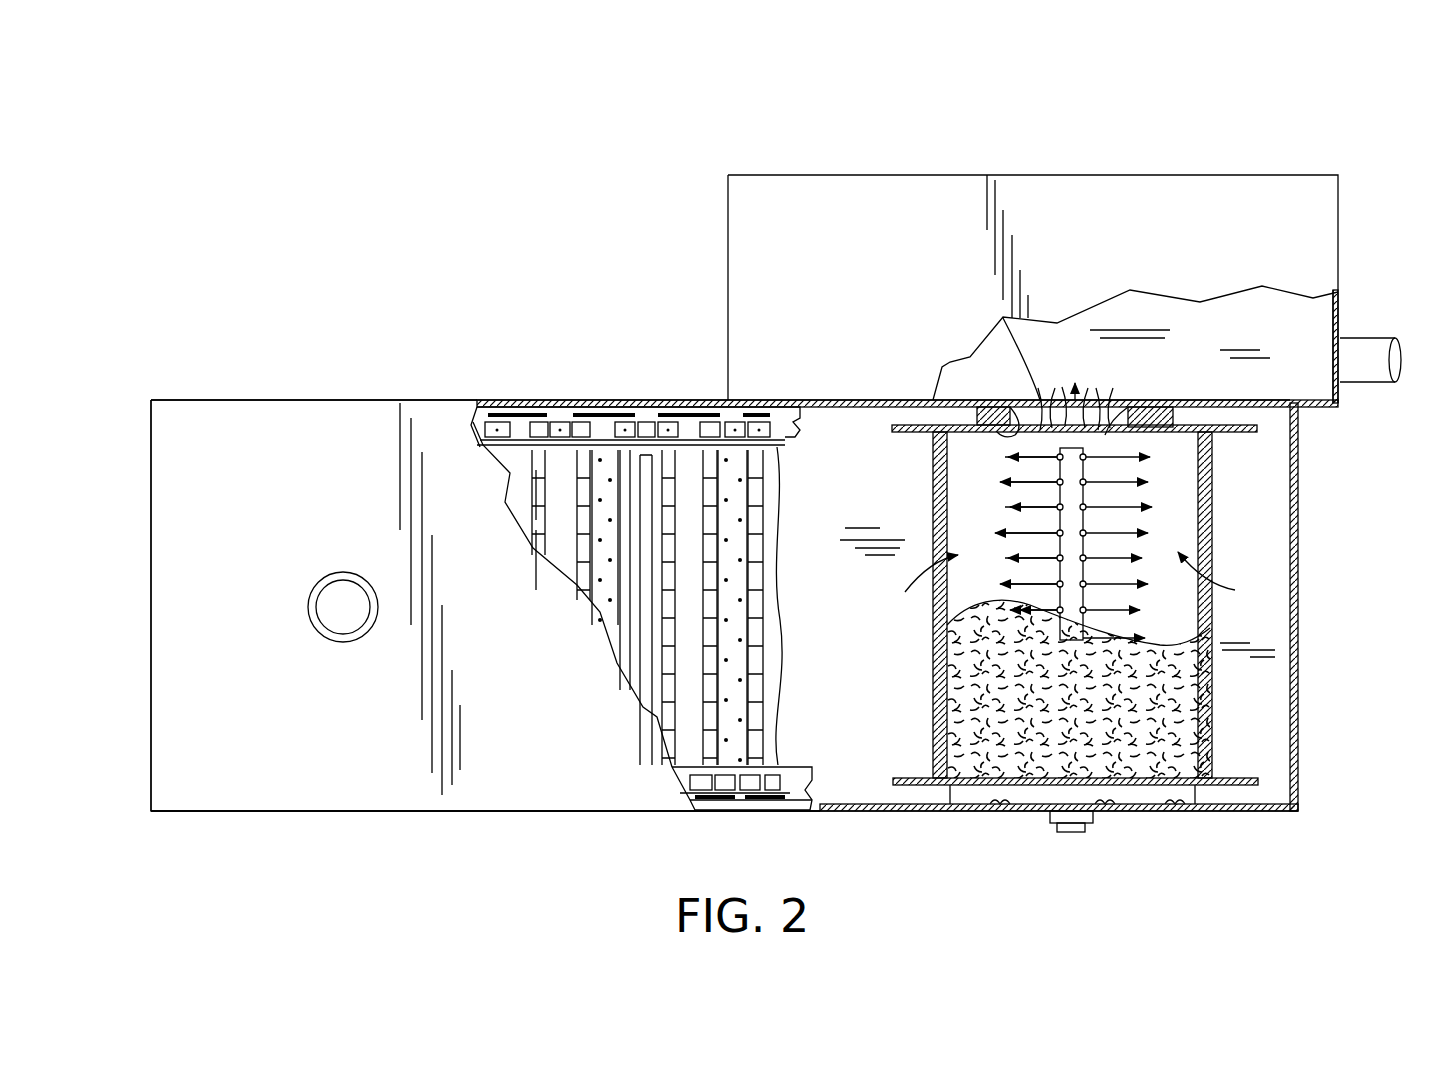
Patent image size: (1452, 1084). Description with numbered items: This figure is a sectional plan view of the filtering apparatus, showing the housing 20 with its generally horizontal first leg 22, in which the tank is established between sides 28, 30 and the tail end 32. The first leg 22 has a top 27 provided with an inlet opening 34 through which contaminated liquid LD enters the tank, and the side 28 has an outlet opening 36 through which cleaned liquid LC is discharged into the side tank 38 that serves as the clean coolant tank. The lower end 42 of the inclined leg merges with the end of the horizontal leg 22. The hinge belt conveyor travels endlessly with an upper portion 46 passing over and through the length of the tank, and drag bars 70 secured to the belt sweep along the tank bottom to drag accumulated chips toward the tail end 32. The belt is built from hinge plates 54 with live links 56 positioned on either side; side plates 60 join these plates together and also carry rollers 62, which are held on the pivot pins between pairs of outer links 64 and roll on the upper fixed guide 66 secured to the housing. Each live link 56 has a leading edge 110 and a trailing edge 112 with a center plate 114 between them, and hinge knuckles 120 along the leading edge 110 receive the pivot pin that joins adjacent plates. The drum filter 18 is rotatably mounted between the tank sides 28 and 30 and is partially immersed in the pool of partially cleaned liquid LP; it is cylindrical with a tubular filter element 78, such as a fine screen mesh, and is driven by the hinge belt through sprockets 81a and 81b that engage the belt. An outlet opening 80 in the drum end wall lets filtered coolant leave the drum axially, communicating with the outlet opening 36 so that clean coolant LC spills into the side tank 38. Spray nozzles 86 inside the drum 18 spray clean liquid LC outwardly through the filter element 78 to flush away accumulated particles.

The drum filter 18 is at (1208, 714).
The housing 20 is at (893, 589).
The first leg 22 is at (243, 428).
The top 27 is at (363, 445).
The side 28 is at (275, 398).
The side 30 is at (305, 812).
The end 32 is at (150, 638).
The inlet opening 34 is at (337, 622).
The outlet opening 36 is at (1130, 405).
The side tank 38 is at (1128, 183).
The lower end 42 is at (1298, 762).
The upper portion 46 is at (532, 417).
The hinge plate 54 is at (600, 600).
The live link 56 is at (560, 565).
The side plate 60 is at (775, 767).
The roller 62 is at (755, 430).
The outer link 64 is at (690, 410).
The upper fixed guide 66 is at (795, 428).
The drag bar 70 is at (655, 515).
The tubular filter element 78 is at (1202, 535).
The outlet opening 80 is at (1007, 377).
The sprocket 81a is at (1243, 790).
The sprocket 81b is at (1248, 432).
The spray nozzle 86 is at (1085, 533).
The leading edge 110 is at (705, 620).
The trailing edge 112 is at (535, 510).
The center plate 114 is at (690, 567).
The hinge knuckle 120 is at (668, 615).
The contaminated liquid LD is at (343, 598).
The cleaned liquid LC is at (1245, 310).
The partially cleaned liquid LP is at (868, 750).